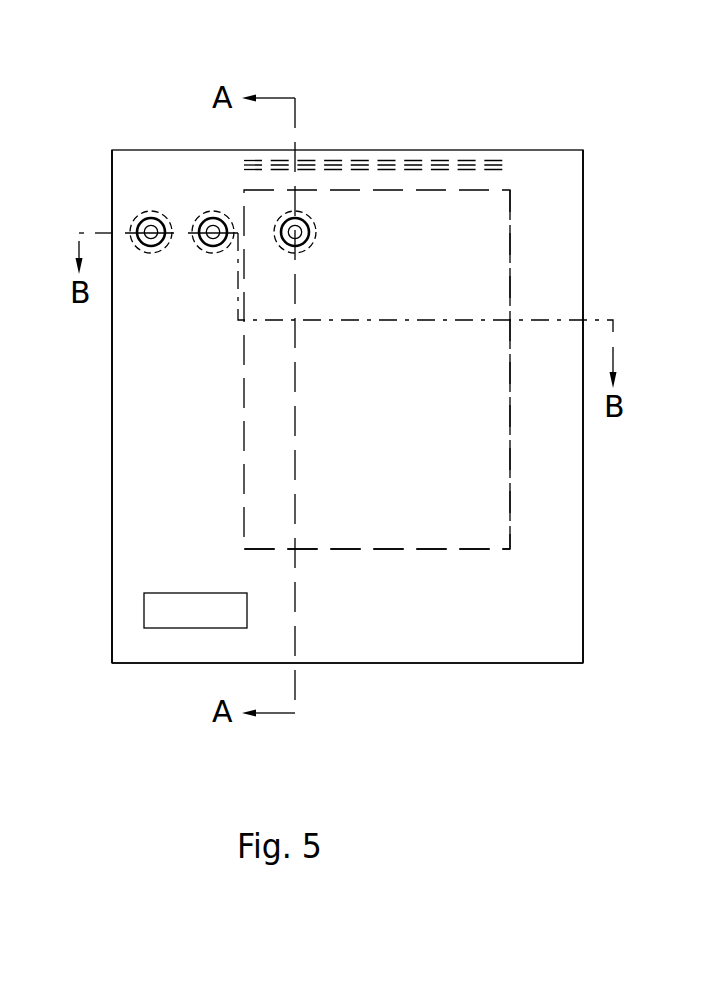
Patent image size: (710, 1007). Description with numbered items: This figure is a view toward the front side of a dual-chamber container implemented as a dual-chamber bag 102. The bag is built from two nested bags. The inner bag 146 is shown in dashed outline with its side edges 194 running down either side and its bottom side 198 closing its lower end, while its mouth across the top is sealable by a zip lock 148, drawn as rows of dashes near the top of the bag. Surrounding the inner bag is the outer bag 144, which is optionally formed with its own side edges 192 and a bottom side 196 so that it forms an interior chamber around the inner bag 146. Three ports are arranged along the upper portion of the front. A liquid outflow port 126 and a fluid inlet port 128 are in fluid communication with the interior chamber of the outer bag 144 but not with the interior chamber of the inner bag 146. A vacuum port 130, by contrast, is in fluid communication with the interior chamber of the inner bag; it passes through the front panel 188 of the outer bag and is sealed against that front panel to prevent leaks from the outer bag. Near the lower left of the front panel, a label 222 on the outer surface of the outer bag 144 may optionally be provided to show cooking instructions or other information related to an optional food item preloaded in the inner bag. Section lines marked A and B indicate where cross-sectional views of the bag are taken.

The dual-chamber bag 102 is at (513, 95).
The liquid outflow port 126 is at (150, 214).
The fluid inlet port 128 is at (215, 252).
The vacuum port 130 is at (311, 232).
The outer bag 144 is at (111, 580).
The inner bag 146 is at (510, 213).
The zip lock 148 is at (352, 160).
The front panel 188 is at (570, 583).
The side edges 192 is at (583, 189).
The side edges 194 is at (244, 432).
The bottom side 196 is at (402, 663).
The bottom side 198 is at (402, 549).
The label 222 is at (143, 613).